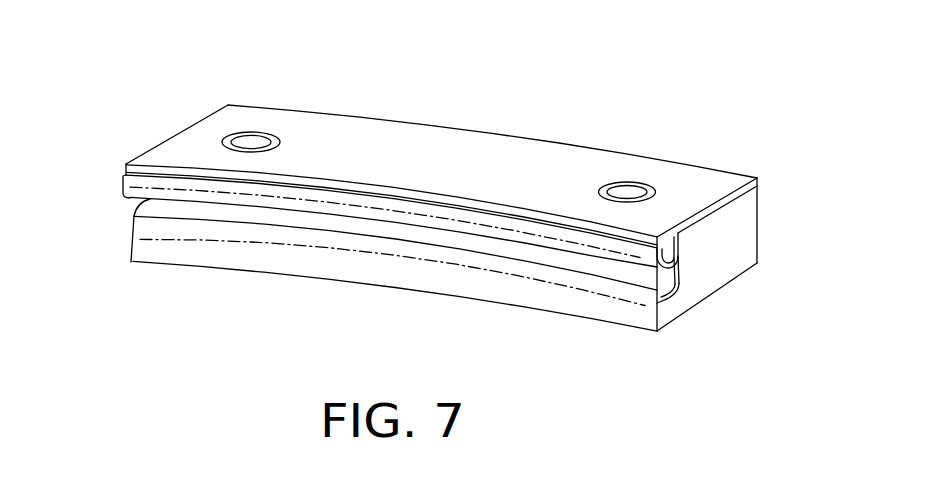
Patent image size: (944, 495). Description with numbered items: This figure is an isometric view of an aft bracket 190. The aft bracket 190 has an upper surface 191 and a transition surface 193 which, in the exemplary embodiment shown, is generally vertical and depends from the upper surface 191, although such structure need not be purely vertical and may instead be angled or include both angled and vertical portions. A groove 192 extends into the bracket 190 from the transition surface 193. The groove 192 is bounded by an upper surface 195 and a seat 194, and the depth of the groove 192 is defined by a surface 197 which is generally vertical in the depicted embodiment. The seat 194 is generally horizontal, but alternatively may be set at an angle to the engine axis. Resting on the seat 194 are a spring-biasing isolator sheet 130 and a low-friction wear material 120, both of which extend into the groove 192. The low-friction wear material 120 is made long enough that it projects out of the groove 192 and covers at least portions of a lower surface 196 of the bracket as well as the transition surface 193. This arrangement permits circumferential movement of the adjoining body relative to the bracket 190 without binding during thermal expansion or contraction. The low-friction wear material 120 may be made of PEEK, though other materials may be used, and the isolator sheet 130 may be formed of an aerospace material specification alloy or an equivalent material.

The aft bracket 190 is at (604, 58).
The upper surface 191 is at (418, 150).
The transition surface 193 is at (520, 212).
The upper surface of groove 195 is at (677, 247).
The groove 192 is at (689, 239).
The groove depth surface 197 is at (681, 284).
The seat 194 is at (668, 296).
The lower surface 196 is at (675, 318).
The spring-biasing isolator sheet 130 is at (662, 301).
The low-friction wear material 120 is at (160, 262).